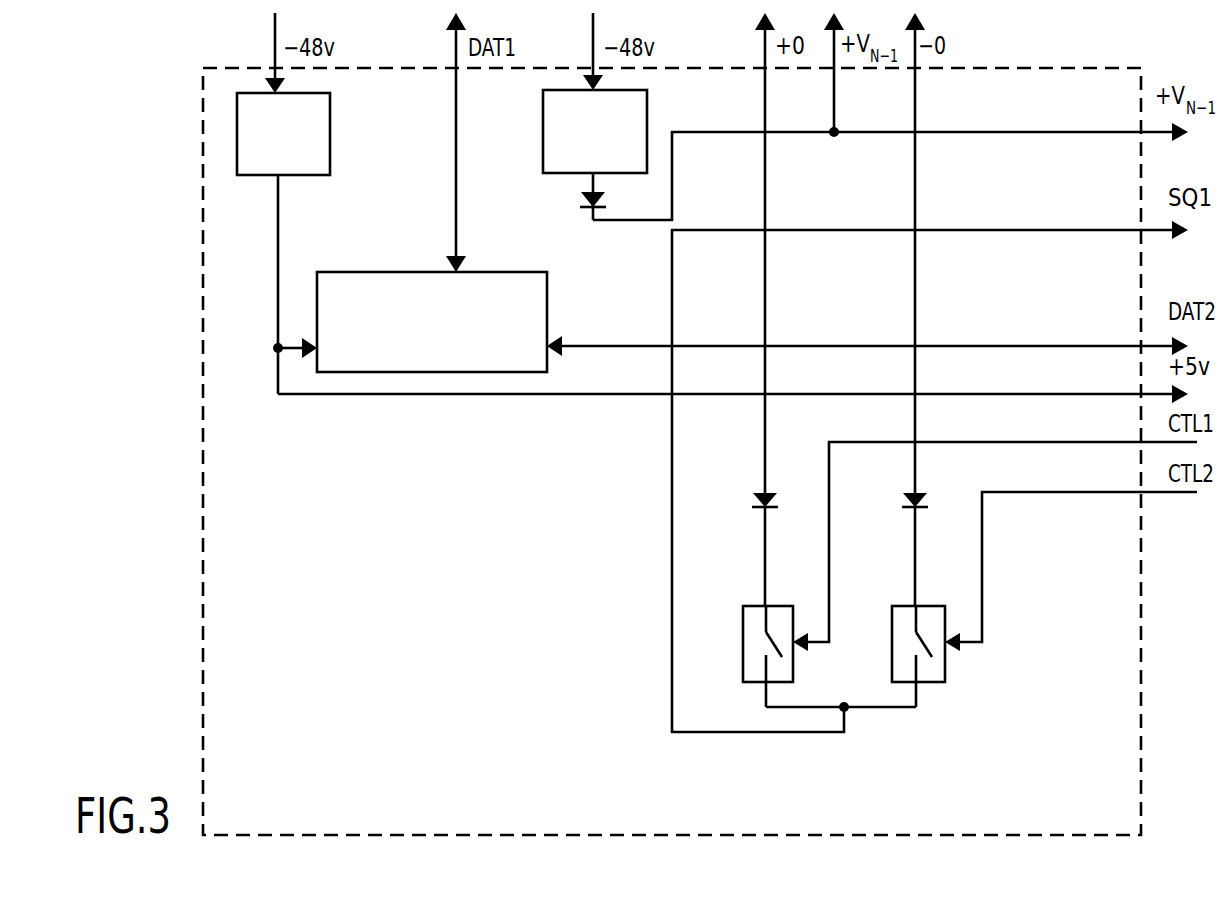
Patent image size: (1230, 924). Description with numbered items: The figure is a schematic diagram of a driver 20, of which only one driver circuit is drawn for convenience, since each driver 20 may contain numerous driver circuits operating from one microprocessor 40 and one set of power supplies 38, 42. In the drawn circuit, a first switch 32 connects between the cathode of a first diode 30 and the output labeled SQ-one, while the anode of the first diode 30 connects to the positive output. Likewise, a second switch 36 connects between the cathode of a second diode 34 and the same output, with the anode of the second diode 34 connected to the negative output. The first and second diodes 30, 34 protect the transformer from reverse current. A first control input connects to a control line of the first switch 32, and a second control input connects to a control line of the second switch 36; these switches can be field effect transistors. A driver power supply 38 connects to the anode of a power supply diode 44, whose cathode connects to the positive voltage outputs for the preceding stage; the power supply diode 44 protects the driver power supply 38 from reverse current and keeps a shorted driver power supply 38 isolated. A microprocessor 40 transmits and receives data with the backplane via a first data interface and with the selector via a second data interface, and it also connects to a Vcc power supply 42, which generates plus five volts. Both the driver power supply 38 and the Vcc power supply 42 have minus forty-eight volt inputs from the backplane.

The driver 20 is at (447, 810).
The first diode D1 30 is at (750, 539).
The switch SW1 32 is at (753, 642).
The second diode D2 34 is at (899, 539).
The switch SW2 36 is at (905, 642).
The driver power supply 38 is at (648, 112).
The microprocessor 40 is at (424, 357).
The Vcc power supply 42 is at (331, 126).
The power supply diode PSD 44 is at (569, 202).